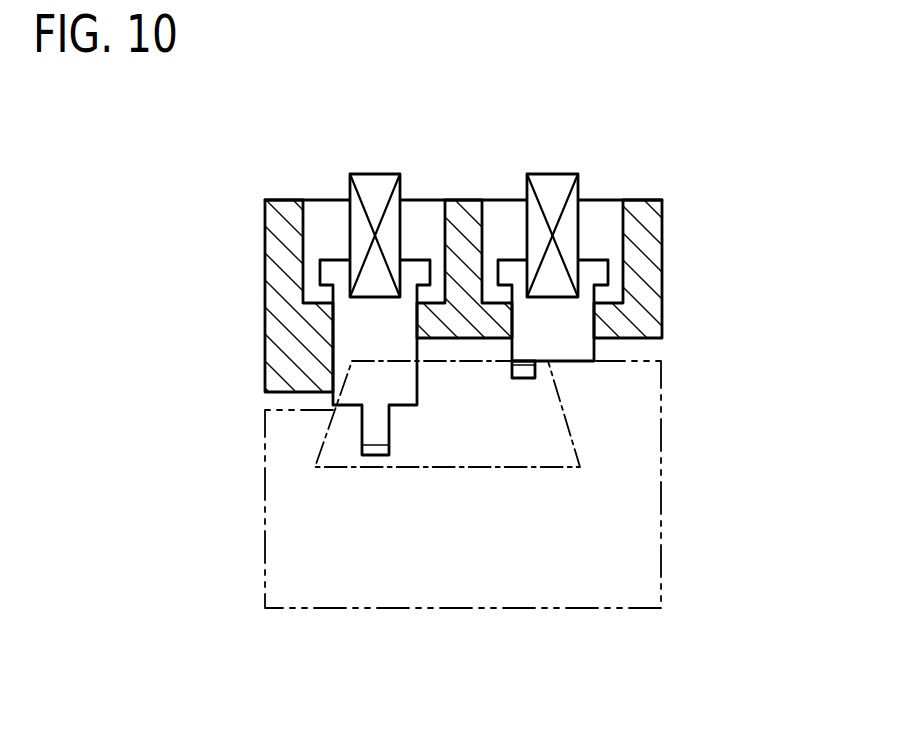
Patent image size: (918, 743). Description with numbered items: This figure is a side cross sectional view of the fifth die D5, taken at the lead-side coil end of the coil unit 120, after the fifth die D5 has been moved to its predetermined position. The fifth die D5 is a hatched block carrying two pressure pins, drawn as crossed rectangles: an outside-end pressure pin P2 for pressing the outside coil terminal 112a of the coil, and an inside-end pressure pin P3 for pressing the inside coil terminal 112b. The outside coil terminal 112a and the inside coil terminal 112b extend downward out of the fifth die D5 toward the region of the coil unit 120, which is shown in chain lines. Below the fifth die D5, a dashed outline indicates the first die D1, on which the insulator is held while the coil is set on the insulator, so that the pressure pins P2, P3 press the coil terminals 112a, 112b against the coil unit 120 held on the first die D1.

The outside-end pressure pin P2 is at (367, 172).
The inside-end pressure pin P3 is at (548, 172).
The fifth die D5 is at (276, 328).
The outside coil terminal 112a is at (378, 458).
The inside coil terminal 112b is at (523, 378).
The coil unit 120 is at (574, 445).
The first die D1 is at (265, 573).